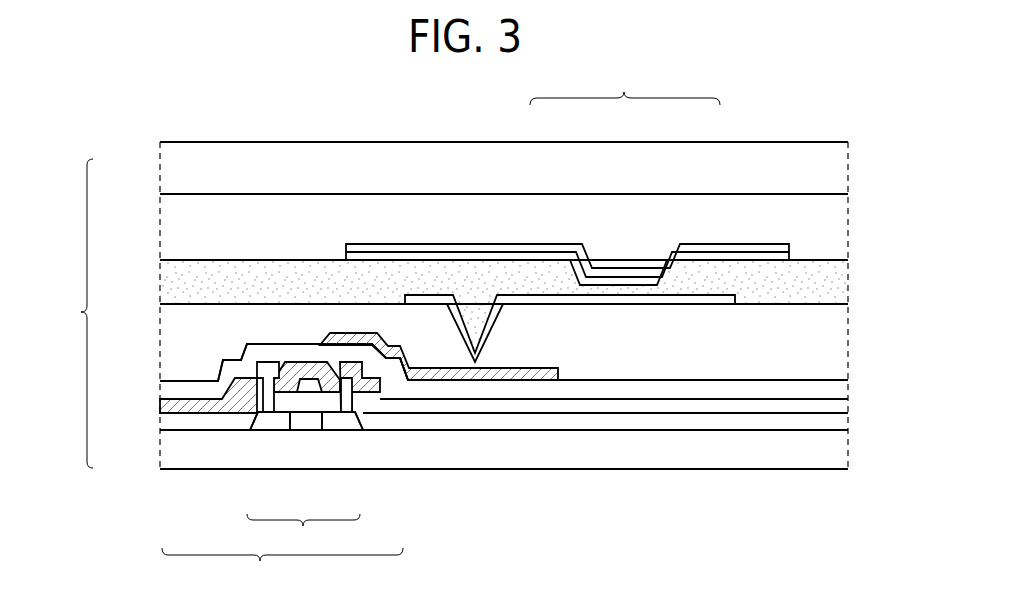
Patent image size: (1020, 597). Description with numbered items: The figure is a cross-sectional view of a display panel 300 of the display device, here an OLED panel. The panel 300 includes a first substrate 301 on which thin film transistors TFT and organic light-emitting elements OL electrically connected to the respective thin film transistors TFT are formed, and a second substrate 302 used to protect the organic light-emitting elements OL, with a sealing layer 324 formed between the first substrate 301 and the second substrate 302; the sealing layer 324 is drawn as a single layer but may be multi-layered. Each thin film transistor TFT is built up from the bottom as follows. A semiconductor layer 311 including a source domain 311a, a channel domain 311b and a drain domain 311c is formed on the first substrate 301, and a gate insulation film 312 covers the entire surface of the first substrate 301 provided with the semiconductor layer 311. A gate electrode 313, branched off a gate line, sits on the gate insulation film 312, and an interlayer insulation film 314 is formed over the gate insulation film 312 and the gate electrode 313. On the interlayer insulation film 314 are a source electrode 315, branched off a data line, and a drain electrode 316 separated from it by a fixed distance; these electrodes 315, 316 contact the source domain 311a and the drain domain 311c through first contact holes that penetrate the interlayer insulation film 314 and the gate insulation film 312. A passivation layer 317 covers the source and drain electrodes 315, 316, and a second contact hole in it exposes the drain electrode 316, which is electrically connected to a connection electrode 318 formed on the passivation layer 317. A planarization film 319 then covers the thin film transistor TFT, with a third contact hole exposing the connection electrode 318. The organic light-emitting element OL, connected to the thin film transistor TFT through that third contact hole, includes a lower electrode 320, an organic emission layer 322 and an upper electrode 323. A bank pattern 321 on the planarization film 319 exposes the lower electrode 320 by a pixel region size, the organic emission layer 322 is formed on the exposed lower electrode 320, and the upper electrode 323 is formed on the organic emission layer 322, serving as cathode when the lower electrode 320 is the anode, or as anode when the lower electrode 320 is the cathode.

The display panel 300 is at (445, 305).
The first substrate 301 is at (163, 454).
The second substrate 302 is at (163, 165).
The semiconductor layer 311 is at (305, 482).
The source domain 311a is at (264, 431).
The channel domain 311b is at (305, 431).
The drain domain 311c is at (343, 431).
The gate insulation film 312 is at (163, 420).
The gate electrode 313 is at (298, 385).
The interlayer insulation film 314 is at (163, 403).
The source electrode 315 is at (268, 400).
The drain electrode 316 is at (350, 386).
The passivation layer 317 is at (163, 383).
The connection electrode 318 is at (502, 373).
The planarization film 319 is at (163, 341).
The lower electrode 320 is at (543, 296).
The bank pattern 321 is at (163, 283).
The organic emission layer 322 is at (626, 284).
The upper electrode 323 is at (708, 245).
The sealing layer 324 is at (163, 233).
The organic light-emitting element OL is at (625, 85).
The thin film transistor TFT is at (282, 567).